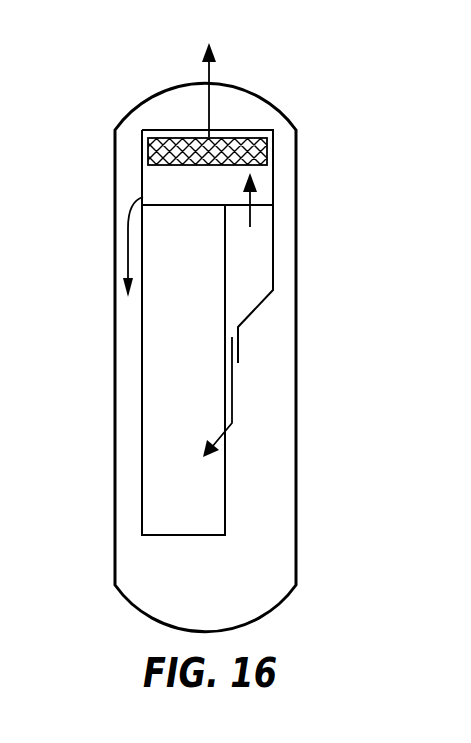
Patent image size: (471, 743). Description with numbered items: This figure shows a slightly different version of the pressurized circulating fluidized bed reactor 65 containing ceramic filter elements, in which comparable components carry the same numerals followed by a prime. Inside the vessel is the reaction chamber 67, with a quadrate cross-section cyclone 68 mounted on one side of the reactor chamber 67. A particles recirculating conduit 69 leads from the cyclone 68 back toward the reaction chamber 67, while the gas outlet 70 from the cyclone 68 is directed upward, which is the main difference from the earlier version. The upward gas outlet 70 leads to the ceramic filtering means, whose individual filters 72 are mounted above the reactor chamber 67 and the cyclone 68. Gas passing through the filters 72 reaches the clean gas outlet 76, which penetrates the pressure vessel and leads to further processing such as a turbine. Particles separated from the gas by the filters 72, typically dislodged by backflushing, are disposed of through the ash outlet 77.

The pressurized circulating fluidized bed reactor 65 is at (284, 76).
The reaction chamber 67 is at (165, 298).
The cyclone 68 is at (252, 237).
The particles recirculating conduit 69 is at (236, 404).
The gas outlet 70 is at (252, 200).
The filter 72 is at (166, 128).
The clean gas outlet 76 is at (212, 73).
The ash outlet 77 is at (128, 226).